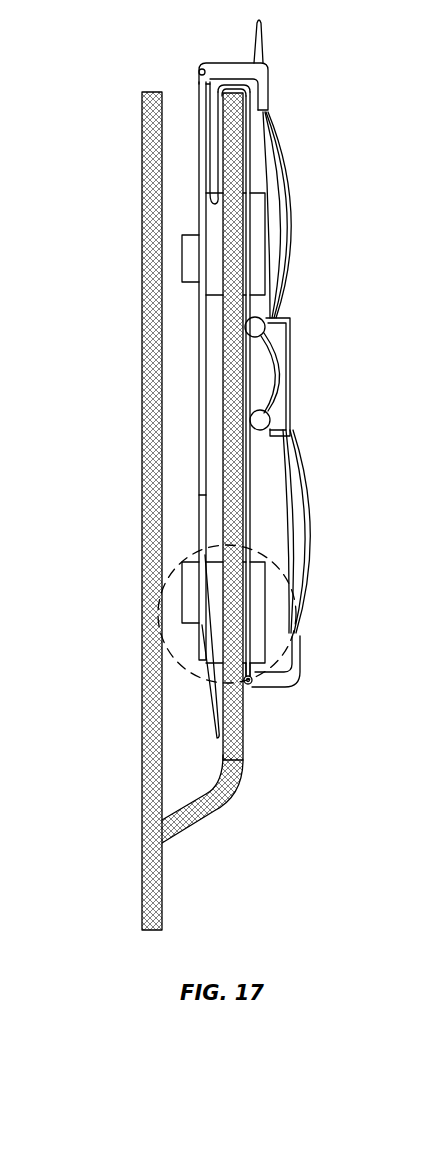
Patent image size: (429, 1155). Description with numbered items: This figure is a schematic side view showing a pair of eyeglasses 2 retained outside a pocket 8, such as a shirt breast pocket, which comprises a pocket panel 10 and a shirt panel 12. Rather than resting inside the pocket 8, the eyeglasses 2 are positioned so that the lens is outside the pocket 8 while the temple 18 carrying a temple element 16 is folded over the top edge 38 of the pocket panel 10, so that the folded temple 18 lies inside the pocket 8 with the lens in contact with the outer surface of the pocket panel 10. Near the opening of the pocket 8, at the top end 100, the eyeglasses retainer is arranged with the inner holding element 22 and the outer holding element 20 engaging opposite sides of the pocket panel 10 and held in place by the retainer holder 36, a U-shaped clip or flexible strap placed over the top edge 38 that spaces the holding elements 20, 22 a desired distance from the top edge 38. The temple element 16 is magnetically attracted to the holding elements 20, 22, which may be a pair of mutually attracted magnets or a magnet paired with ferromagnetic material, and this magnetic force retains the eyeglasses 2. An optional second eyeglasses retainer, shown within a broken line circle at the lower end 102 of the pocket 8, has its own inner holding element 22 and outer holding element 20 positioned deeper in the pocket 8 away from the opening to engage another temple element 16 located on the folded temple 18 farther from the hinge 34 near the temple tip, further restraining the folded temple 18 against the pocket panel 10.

The eyeglasses 2 is at (291, 150).
The pocket 8 is at (234, 840).
The pocket panel 10 is at (233, 495).
The shirt panel 12 is at (152, 394).
The temple element 16 is at (191, 258).
The temple 18 is at (197, 100).
The outer holding element 20 is at (253, 242).
The inner holding element 22 is at (213, 217).
The hinge 34 is at (219, 70).
The retainer holder 36 is at (246, 104).
The top edge 38 is at (233, 89).
The top end 100 is at (130, 130).
The lower end 102 is at (298, 694).